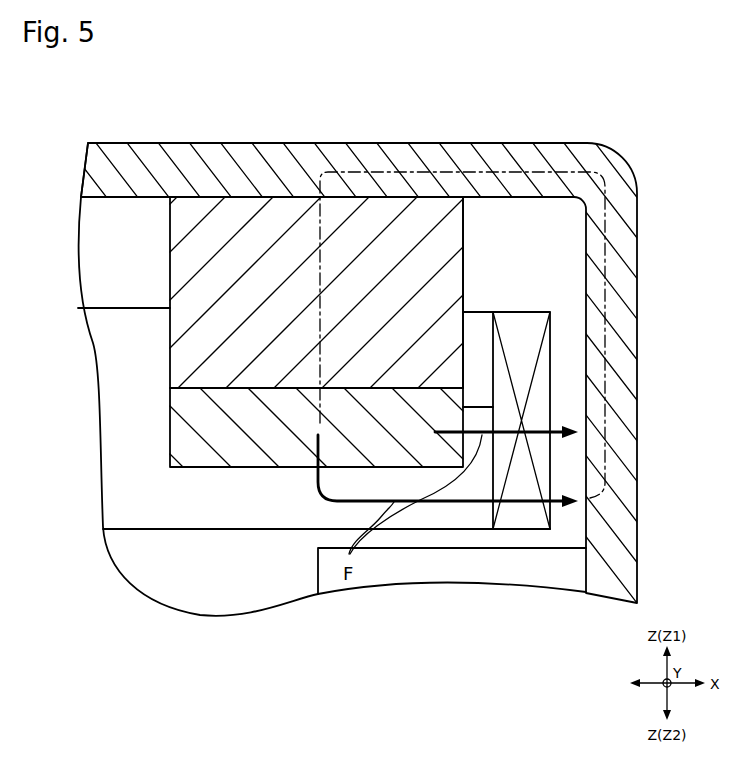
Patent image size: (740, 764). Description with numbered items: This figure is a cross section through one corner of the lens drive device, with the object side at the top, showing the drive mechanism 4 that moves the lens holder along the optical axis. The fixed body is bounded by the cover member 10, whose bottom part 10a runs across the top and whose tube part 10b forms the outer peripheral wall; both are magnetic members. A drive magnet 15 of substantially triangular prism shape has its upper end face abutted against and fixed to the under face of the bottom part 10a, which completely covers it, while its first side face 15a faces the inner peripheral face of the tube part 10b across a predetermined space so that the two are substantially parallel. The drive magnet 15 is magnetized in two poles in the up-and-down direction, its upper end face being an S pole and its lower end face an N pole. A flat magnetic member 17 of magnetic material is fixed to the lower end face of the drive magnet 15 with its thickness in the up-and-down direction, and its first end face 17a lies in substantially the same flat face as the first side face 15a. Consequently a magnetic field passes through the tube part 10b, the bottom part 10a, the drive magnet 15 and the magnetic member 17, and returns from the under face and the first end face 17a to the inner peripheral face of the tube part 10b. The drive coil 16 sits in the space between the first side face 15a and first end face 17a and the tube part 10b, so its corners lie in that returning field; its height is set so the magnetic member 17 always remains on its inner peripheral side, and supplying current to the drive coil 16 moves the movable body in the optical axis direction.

The cover member 10 is at (397, 358).
The bottom part 10a is at (412, 143).
The tube part 10b is at (637, 228).
The drive magnet 15 is at (170, 263).
The first side face 15a is at (465, 234).
The drive coil 16 is at (550, 357).
The magnetic member 17 is at (170, 425).
The first end face 17a is at (493, 406).
The drive mechanism 4 is at (572, 280).